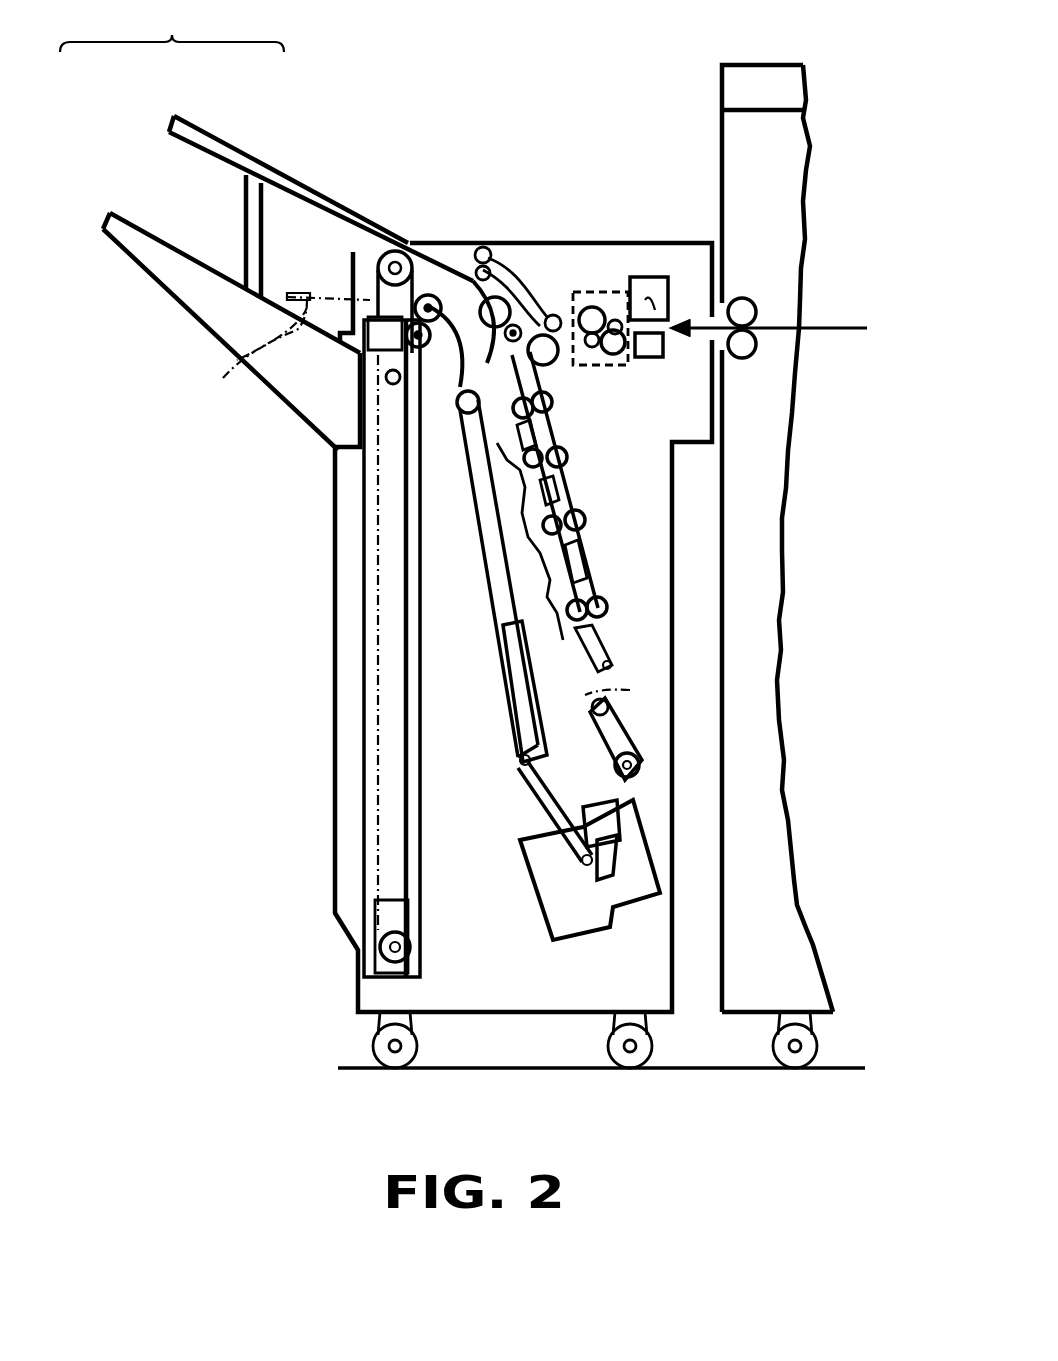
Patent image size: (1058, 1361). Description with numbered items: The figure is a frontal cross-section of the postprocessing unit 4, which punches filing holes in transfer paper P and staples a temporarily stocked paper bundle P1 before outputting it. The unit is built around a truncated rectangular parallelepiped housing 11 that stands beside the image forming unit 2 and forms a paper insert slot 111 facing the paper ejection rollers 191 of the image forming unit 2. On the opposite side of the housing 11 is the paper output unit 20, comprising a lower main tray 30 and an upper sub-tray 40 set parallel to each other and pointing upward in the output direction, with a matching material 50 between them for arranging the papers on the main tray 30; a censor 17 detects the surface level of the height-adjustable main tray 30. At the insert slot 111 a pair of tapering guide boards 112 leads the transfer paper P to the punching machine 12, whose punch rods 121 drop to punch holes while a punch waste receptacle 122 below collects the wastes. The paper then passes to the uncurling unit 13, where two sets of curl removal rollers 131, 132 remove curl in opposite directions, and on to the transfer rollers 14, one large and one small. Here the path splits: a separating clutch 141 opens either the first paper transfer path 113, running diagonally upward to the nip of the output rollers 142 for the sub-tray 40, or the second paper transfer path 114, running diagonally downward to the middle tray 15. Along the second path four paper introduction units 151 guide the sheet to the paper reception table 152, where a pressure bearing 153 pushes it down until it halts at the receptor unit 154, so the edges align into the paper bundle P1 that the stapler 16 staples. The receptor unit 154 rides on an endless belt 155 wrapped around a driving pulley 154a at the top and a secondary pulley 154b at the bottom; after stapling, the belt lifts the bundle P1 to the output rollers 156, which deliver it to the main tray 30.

The image forming unit 2 is at (697, 93).
The postprocessing unit 4 is at (410, 243).
The paper output unit 20 is at (172, 28).
The main tray 30 is at (188, 247).
The sub-tray 40 is at (273, 163).
The matching material 50 is at (240, 215).
The housing 11 is at (652, 277).
The paper insert slot 111 is at (675, 330).
The guide boards 112 is at (678, 325).
The punching machine 12 is at (673, 277).
The punch rods 121 is at (670, 330).
The punch waste receptacle 122 is at (652, 357).
The uncurling unit 13 is at (598, 296).
The curl removal rollers 131 is at (617, 303).
The curl removal rollers 132 is at (588, 305).
The transfer rollers 14 is at (553, 350).
The separating clutch 141 is at (530, 283).
The output rollers 142 is at (467, 245).
The first paper transfer path 113 is at (507, 240).
The second paper transfer path 114 is at (475, 420).
The middle tray 15 is at (590, 566).
The paper introduction units 151 is at (552, 405).
The paper reception table 152 is at (583, 807).
The pressure bearing 153 is at (640, 758).
The receptor unit 154 is at (613, 853).
The driving pulley 154a is at (458, 405).
The secondary pulley 154b is at (593, 873).
The endless belt 155 is at (552, 860).
The output rollers 156 is at (420, 297).
The stapler 16 is at (590, 927).
The censor 17 is at (393, 377).
The paper ejection rollers 191 is at (758, 303).
The transfer paper P is at (791, 347).
The paper bundle P1 is at (430, 498).